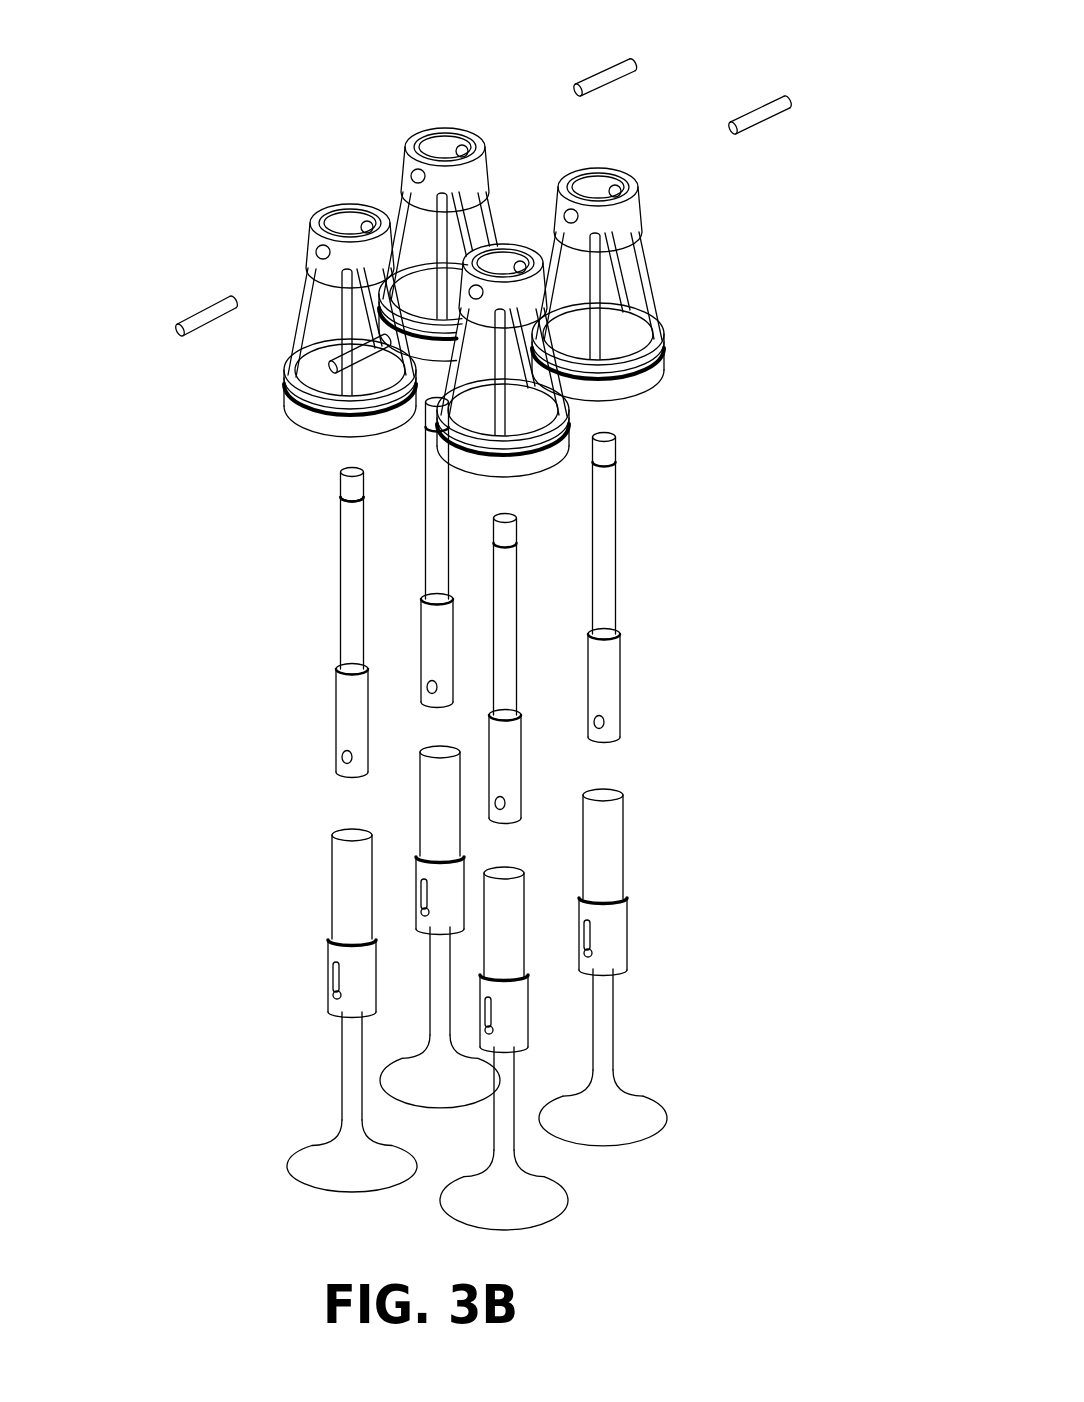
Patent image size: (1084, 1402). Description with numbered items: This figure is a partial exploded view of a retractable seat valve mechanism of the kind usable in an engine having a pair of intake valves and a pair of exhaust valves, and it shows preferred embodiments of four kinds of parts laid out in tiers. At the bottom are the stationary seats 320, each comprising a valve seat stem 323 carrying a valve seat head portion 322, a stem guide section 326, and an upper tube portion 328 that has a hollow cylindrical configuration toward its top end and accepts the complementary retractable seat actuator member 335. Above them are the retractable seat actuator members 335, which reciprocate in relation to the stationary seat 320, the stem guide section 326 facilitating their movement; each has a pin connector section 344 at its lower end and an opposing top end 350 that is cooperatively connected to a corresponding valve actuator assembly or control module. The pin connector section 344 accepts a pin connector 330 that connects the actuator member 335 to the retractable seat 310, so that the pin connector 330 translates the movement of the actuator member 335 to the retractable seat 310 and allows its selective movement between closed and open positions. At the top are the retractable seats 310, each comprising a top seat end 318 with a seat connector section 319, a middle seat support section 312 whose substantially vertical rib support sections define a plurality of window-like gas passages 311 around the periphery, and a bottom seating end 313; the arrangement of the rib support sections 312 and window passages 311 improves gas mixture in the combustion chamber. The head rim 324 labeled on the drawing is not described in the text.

The retractable seat 310 is at (476, 262).
The window-like gas passages 311 is at (320, 313).
The middle seat support section 312 is at (397, 220).
The bottom seating end 313 is at (283, 413).
The top seat end 318 is at (402, 165).
The seat connector section 319 is at (367, 222).
The pin connector 330 is at (172, 327).
The retractable seat actuator member 335 is at (407, 611).
The top end 350 is at (335, 517).
The pin connector section 344 is at (342, 759).
The stationary seat 320 is at (466, 998).
The upper tube portion 328 is at (332, 867).
The stem guide section 326 is at (328, 968).
The valve seat stem 323 is at (342, 1073).
The valve seat head portion 322 is at (471, 1143).
The head rim 324 is at (293, 1162).